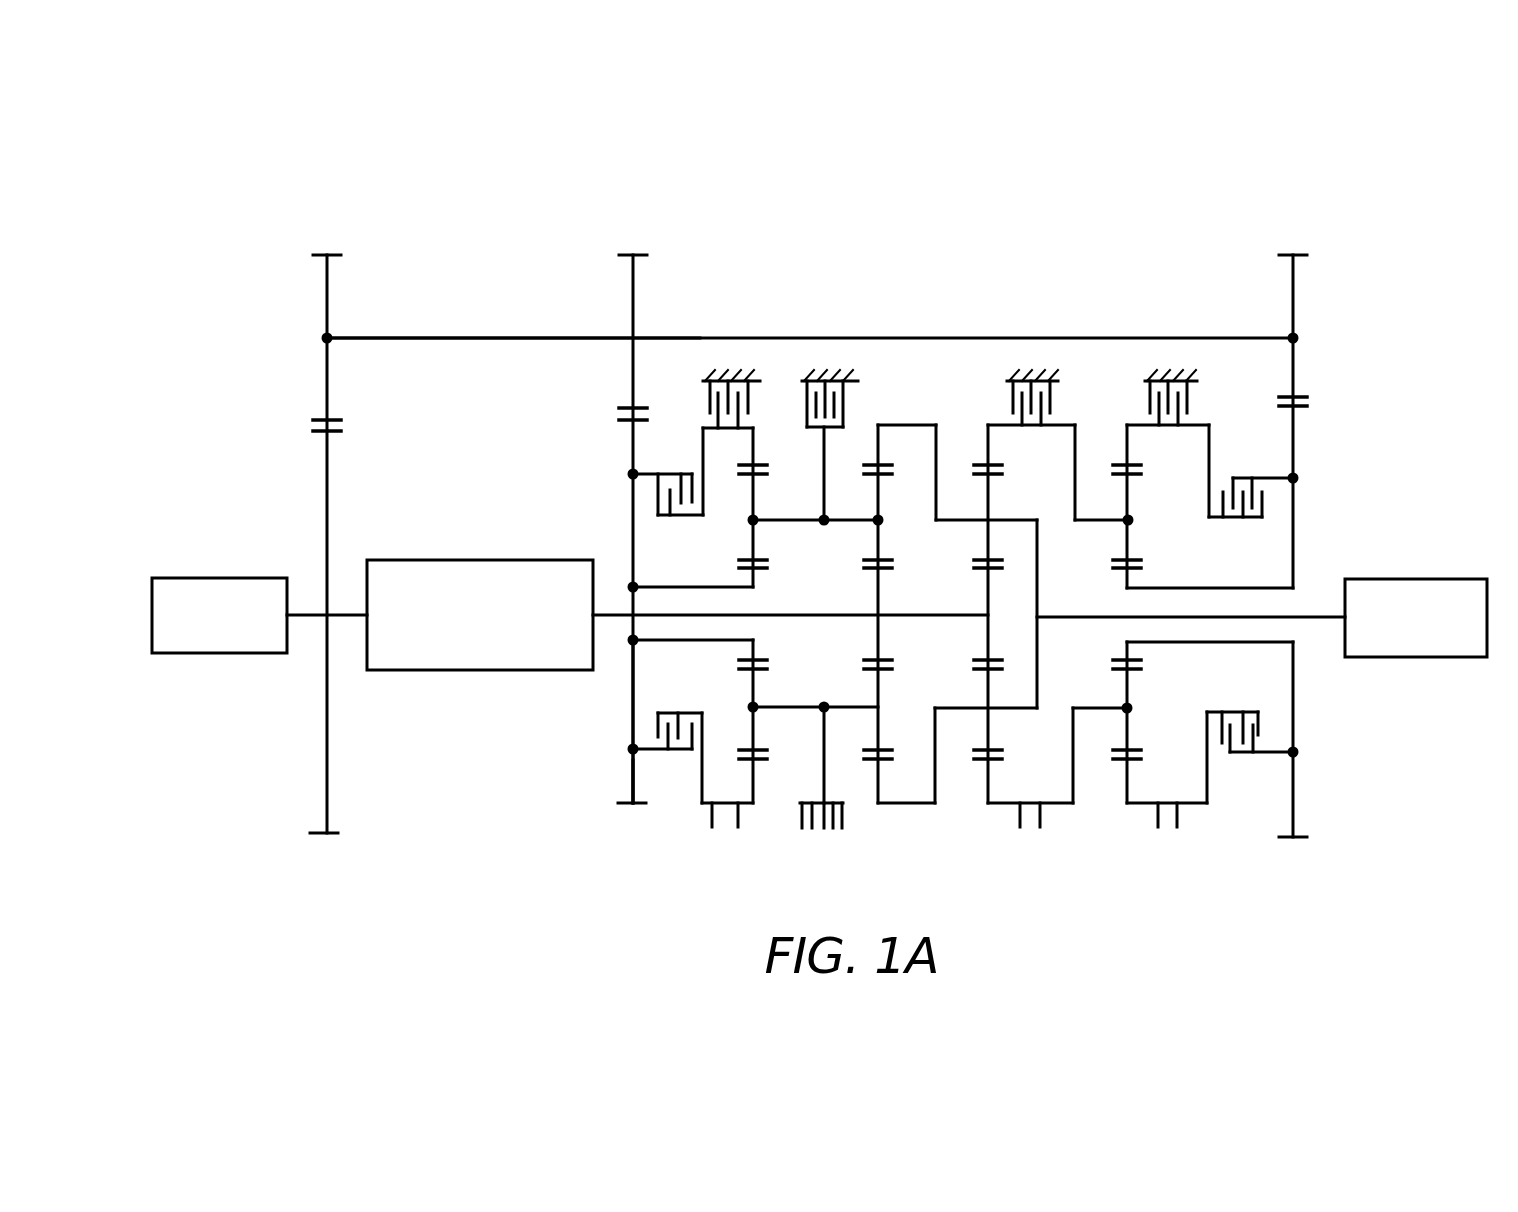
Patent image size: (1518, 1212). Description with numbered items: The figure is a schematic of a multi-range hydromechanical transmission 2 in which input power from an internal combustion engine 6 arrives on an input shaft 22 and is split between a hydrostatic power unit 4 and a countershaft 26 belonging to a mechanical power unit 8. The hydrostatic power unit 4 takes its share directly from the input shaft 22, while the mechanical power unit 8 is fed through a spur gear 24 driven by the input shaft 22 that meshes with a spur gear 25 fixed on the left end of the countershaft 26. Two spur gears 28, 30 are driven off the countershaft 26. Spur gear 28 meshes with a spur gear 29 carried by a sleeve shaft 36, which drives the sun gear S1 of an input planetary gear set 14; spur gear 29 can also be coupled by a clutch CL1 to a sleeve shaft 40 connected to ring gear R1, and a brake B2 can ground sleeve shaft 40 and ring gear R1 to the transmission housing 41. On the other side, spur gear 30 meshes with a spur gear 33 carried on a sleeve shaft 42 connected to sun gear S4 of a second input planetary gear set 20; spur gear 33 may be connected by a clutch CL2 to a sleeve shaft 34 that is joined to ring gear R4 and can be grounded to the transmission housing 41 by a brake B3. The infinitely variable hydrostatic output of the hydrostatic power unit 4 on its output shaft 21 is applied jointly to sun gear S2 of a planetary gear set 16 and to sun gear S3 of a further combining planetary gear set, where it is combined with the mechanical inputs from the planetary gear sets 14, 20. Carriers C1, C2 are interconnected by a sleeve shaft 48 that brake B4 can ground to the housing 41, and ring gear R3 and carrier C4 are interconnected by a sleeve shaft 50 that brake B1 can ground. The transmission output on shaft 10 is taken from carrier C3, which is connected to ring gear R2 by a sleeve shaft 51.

The multi-range hydromechanical transmission 2 is at (1068, 272).
The hydrostatic power unit (HSU) 4 is at (500, 670).
The internal combustion engine 6 is at (258, 578).
The mechanical power unit 8 is at (606, 762).
The output shaft 10 is at (1305, 615).
The input planetary gear set 14 is at (776, 688).
The planetary gear set 16 is at (883, 733).
The second input planetary gear set 20 is at (1137, 704).
The output shaft 21 is at (819, 615).
The input shaft 22 is at (304, 618).
The spur gear 24 is at (329, 476).
The spur gear 25 is at (329, 395).
The countershaft 26 is at (684, 338).
The spur gear 28 is at (631, 348).
The spur gear 29 is at (631, 690).
The spur gear 30 is at (1295, 368).
The spur gear 33 is at (1295, 440).
The sleeve shaft 34 is at (1210, 455).
The sleeve shaft 36 is at (662, 587).
The sleeve shaft 40 is at (701, 455).
The transmission housing 41 is at (745, 378).
The sleeve shaft 42 is at (1260, 644).
The sleeve shaft 48 is at (812, 707).
The sleeve shaft 50 is at (1112, 708).
The sleeve shaft 51 is at (936, 425).
The brake B1 is at (1058, 408).
The brake B2 is at (706, 400).
The brake B3 is at (1198, 408).
The brake B4 is at (860, 406).
The ring gear R1 is at (752, 460).
The ring gear R2 is at (879, 460).
The ring gear R3 is at (992, 445).
The ring gear R4 is at (1130, 445).
The planetary gear carrier C1 is at (752, 514).
The planetary gear carrier C2 is at (877, 530).
The planetary gear carrier C3 is at (992, 502).
The planet gear carrier C4 is at (1130, 502).
The sun gear S1 is at (755, 578).
The sun gear S2 is at (880, 632).
The sun gear S3 is at (987, 632).
The sun gear S4 is at (1127, 578).
The clutch CL1 is at (652, 726).
The clutch CL2 is at (1260, 522).